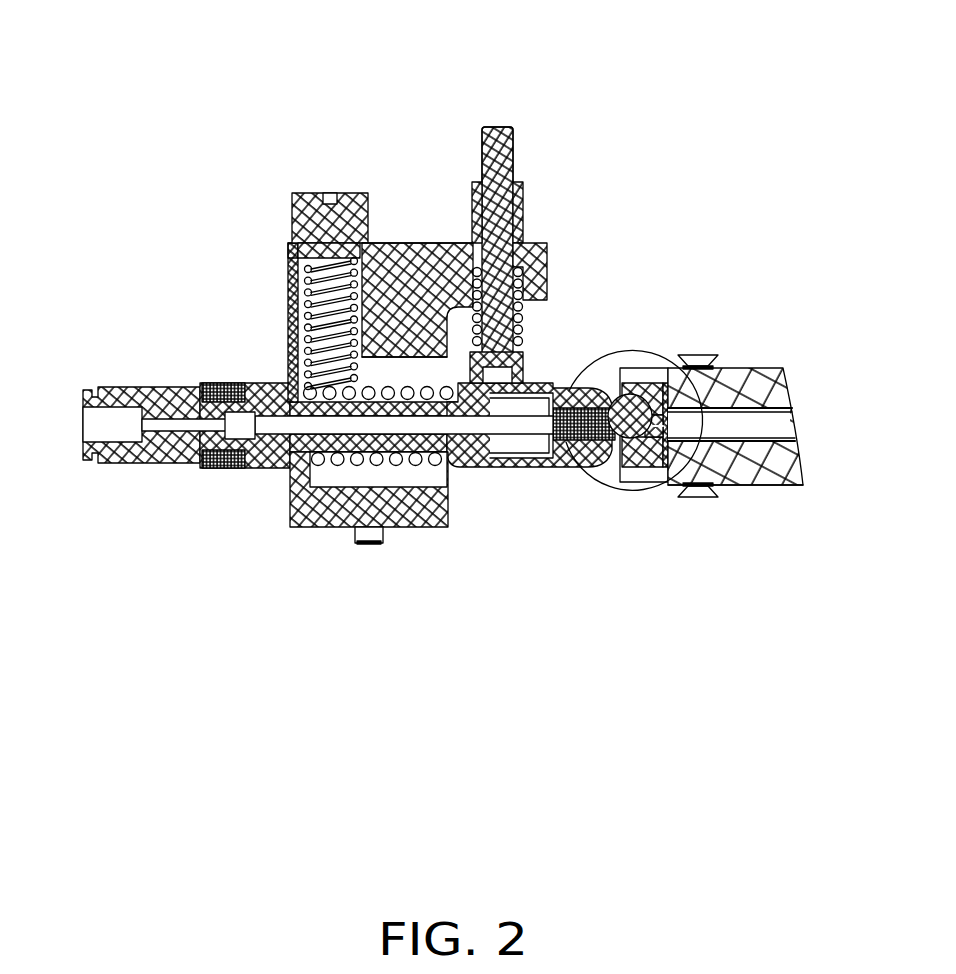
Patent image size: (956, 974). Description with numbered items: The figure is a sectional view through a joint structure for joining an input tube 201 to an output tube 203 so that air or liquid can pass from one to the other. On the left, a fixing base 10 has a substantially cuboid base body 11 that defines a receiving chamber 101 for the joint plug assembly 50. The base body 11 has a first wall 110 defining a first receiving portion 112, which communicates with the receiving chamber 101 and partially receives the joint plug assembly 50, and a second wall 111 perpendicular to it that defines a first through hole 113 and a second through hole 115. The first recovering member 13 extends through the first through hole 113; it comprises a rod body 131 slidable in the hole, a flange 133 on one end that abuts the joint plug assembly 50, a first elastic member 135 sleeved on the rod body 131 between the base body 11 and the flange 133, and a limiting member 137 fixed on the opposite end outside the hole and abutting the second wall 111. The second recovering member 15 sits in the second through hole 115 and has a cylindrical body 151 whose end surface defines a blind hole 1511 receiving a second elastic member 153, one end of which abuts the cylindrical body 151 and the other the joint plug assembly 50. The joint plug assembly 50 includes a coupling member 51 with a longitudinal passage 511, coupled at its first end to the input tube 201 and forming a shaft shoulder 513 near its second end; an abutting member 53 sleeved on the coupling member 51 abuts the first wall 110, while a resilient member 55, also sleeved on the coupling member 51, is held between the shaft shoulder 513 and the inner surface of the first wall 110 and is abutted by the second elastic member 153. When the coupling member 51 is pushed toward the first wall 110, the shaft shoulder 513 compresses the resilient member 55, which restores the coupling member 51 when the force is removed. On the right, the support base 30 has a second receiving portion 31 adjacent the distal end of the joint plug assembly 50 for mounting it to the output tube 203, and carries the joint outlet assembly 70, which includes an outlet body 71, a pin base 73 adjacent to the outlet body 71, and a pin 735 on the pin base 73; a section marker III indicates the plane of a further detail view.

The fixing base 10 is at (388, 183).
The base body 11 is at (407, 258).
The second wall 111 is at (445, 241).
The first wall 110 is at (292, 303).
The second through hole 115 is at (292, 276).
The receiving chamber 101 is at (400, 370).
The first receiving portion 112 is at (292, 470).
The first recovering member 13 is at (498, 122).
The rod body 131 is at (512, 142).
The flange 133 is at (520, 364).
The first elastic member 135 is at (525, 317).
The limiting member 137 is at (524, 200).
The first through hole 113 is at (530, 248).
The second recovering member 15 is at (266, 212).
The cylindrical body 151 is at (328, 205).
The second elastic member 153 is at (335, 236).
The blind hole 1511 is at (342, 268).
The joint plug assembly 50 is at (505, 485).
The coupling member 51 is at (272, 455).
The passage 511 is at (338, 425).
The shaft shoulder 513 is at (470, 470).
The abutting member 53 is at (198, 390).
The resilient member 55 is at (290, 398).
The input tube 201 is at (132, 398).
The joint outlet assembly 70 is at (612, 476).
The outlet body 71 is at (636, 478).
The pin 735 is at (655, 470).
The pin base 73 is at (703, 486).
The support base 30 is at (755, 378).
The second receiving portion 31 is at (750, 465).
The output tube 203 is at (768, 427).
The section line III is at (640, 352).